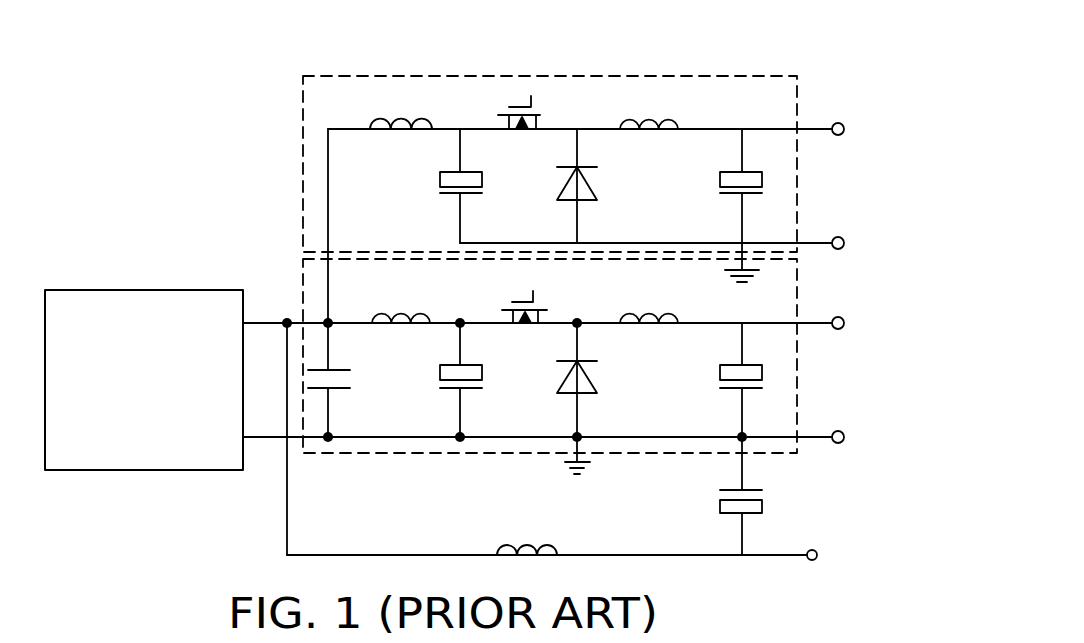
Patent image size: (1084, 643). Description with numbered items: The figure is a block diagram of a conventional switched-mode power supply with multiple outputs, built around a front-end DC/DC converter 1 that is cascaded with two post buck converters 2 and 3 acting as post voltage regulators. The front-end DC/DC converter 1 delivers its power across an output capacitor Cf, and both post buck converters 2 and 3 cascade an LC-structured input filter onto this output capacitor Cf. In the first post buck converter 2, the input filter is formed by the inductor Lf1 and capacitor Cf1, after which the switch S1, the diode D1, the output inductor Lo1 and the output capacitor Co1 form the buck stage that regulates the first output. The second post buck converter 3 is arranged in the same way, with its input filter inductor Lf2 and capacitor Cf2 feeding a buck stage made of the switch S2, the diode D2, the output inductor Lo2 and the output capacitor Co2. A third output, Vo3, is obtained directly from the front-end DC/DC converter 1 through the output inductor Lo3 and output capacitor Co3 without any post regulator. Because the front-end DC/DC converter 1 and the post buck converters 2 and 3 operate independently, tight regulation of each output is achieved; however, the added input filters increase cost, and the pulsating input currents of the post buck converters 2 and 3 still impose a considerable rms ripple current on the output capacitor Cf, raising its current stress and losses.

The front-end DC/DC converter 1 is at (155, 290).
The post buck converter 2 is at (303, 188).
The post buck converter 3 is at (303, 453).
The input filter inductor Lf1 is at (401, 107).
The input filter capacitor Cf1 is at (441, 186).
The switch S1 is at (535, 106).
The diode D1 is at (582, 186).
The output inductor Lo1 is at (649, 106).
The output capacitor Co1 is at (751, 205).
The output capacitor Cf is at (342, 397).
The input filter inductor Lf2 is at (401, 301).
The input filter capacitor Cf2 is at (471, 380).
The switch S2 is at (539, 300).
The diode D2 is at (583, 398).
The output inductor Lo2 is at (649, 300).
The output capacitor Co2 is at (753, 380).
The output capacitor Co3 is at (754, 496).
The output inductor Lo3 is at (527, 532).
The output voltage Vo3 is at (847, 553).